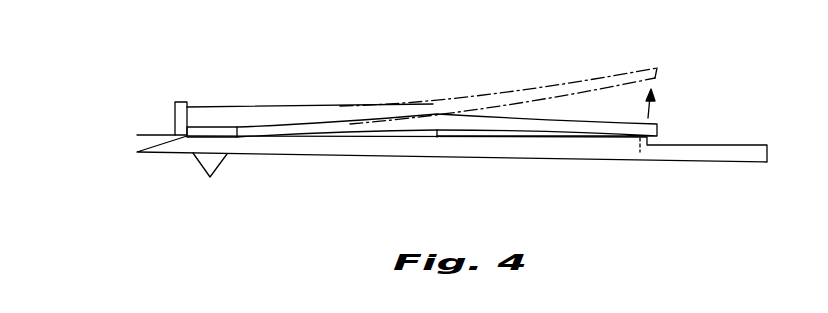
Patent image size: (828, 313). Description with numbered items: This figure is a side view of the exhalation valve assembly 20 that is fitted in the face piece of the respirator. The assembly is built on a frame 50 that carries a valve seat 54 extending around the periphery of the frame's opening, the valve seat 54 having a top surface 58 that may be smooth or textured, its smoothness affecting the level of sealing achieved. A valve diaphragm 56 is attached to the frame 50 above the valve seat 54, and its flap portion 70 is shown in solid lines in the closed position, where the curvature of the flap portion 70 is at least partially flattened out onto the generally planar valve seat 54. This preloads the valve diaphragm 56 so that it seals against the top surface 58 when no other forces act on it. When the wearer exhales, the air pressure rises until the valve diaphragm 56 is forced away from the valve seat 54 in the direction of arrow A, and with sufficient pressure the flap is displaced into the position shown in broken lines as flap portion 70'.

The exhalation valve assembly 20 is at (128, 62).
The frame 50 is at (156, 144).
The valve seat 54 is at (443, 138).
The valve diaphragm 56 is at (219, 100).
The top surface 58 is at (437, 112).
The flap portion 70 is at (447, 164).
The flap portion in displaced position 70' is at (498, 66).
The arrow A is at (653, 110).